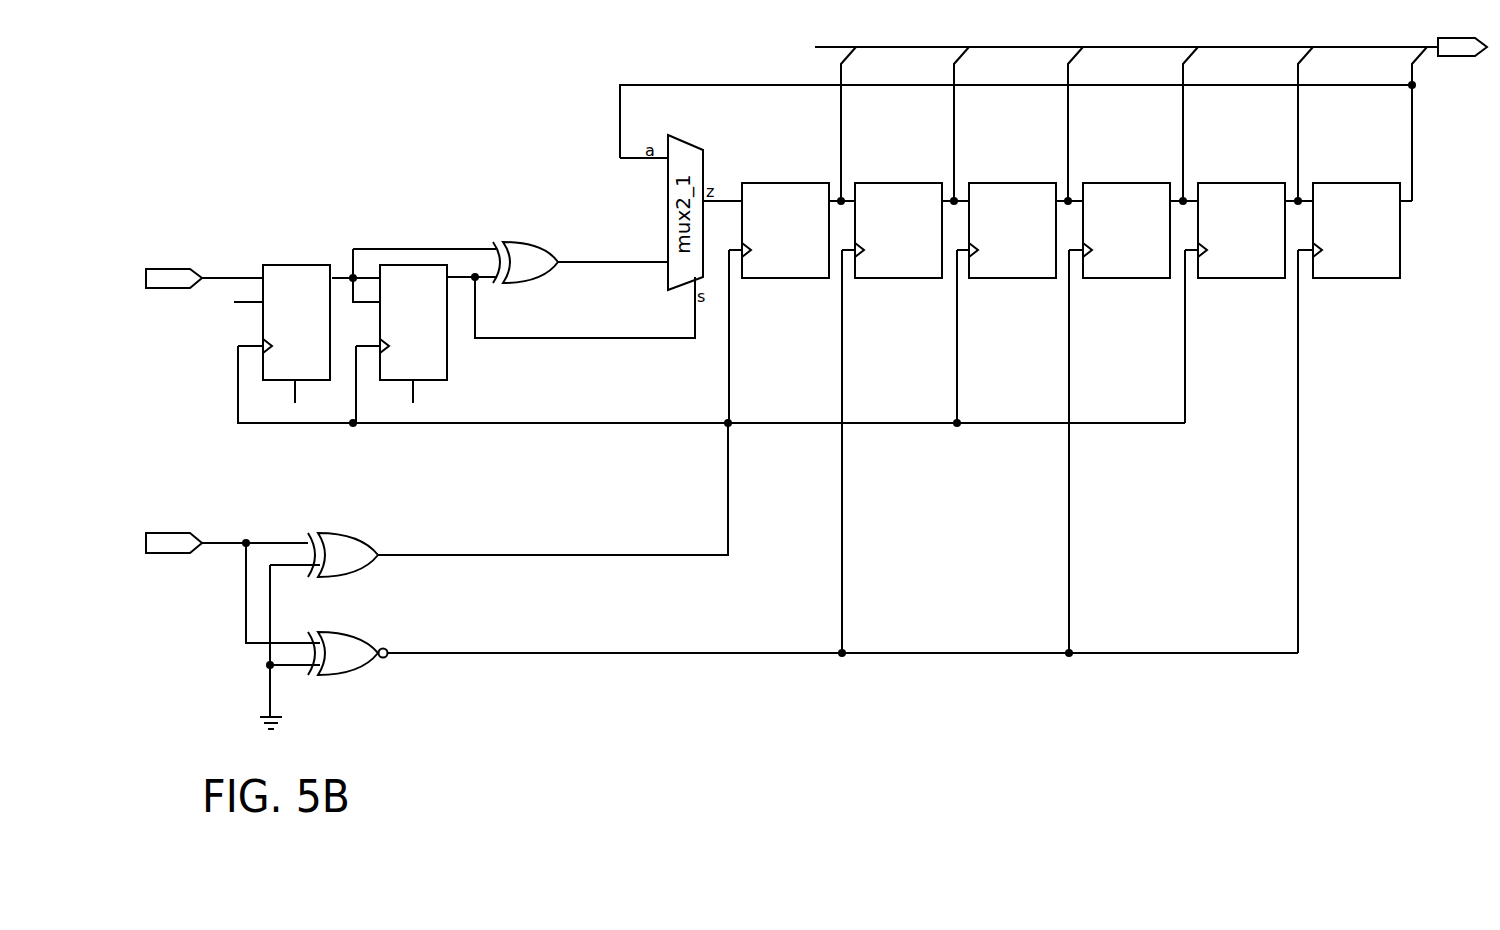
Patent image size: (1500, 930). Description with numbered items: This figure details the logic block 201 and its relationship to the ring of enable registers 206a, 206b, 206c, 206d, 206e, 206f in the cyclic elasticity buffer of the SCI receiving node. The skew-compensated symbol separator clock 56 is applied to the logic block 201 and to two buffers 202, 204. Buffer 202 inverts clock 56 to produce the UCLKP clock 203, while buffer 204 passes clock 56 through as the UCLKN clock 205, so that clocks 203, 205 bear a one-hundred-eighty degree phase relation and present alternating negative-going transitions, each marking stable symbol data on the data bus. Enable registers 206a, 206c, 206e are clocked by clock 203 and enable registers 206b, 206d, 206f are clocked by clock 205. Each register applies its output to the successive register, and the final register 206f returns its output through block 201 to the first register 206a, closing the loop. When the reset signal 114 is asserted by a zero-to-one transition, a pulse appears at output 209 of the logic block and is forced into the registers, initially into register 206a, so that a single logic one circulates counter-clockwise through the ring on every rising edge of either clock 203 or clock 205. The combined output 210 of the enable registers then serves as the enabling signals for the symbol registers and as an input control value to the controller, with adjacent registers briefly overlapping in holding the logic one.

The reset signal 114 is at (208, 278).
The logic block 201 is at (470, 170).
The output 209 is at (578, 253).
The enable register 206a is at (747, 182).
The enable register 206b is at (860, 182).
The enable register 206c is at (974, 182).
The enable register 206d is at (1088, 182).
The enable register 206e is at (1203, 182).
The enable register 206f is at (1318, 182).
The output of registers 210 is at (1153, 47).
The symbol separator clock 56 is at (212, 543).
The buffer 202 is at (337, 533).
The UCLKP clock 203 is at (453, 555).
The buffer 204 is at (337, 632).
The UCLKN clock 205 is at (453, 653).